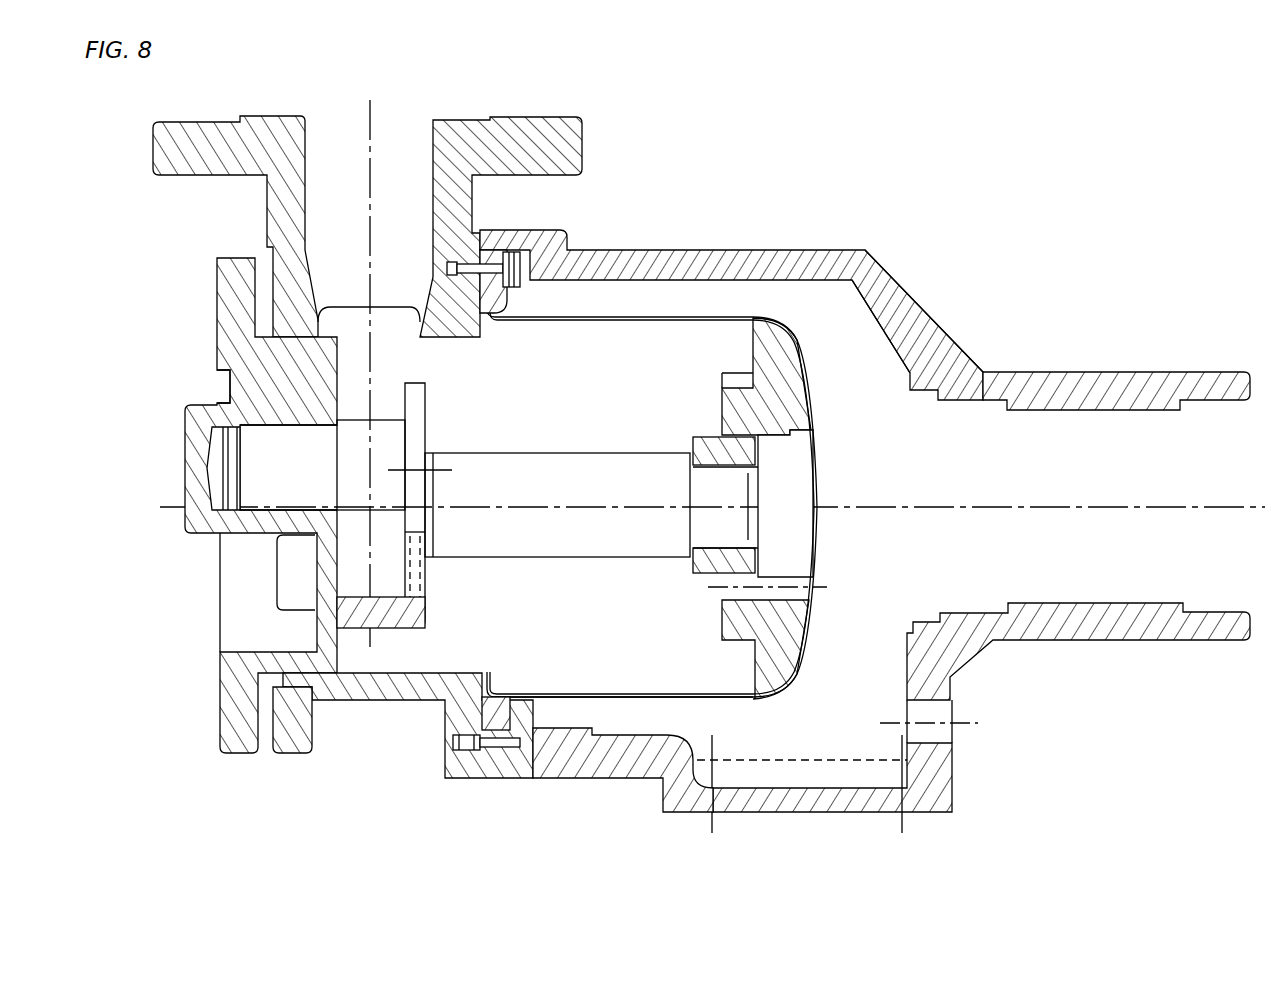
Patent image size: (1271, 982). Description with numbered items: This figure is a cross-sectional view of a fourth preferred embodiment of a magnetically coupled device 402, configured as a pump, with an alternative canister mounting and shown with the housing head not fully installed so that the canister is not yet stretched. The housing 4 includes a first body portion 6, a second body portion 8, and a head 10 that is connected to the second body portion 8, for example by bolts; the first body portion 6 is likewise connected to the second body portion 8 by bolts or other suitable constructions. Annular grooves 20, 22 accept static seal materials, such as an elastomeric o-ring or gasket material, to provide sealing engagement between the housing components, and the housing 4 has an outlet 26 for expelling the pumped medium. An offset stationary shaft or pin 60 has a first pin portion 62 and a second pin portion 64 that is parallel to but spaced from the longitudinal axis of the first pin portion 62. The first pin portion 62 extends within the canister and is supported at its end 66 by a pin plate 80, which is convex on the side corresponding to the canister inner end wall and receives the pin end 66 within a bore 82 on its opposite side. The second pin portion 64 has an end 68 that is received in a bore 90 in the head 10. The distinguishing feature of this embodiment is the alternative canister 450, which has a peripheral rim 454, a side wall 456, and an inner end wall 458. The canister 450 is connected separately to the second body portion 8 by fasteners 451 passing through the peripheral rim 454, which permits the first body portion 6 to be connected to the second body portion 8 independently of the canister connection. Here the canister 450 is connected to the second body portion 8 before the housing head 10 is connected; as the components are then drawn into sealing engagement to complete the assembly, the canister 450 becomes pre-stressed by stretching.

The housing 4 is at (808, 250).
The first body portion 6 is at (1020, 380).
The second body portion 8 is at (290, 755).
The head 10 is at (232, 760).
The annular groove 20 is at (277, 333).
The annular groove 22 is at (478, 720).
The outlet 26 is at (408, 147).
The offset stationary shaft or pin 60 is at (583, 448).
The first pin portion 62 is at (628, 475).
The second pin portion 64 is at (303, 447).
The end of first pin portion 66 is at (700, 482).
The end of second pin portion 68 is at (255, 490).
The pin plate 80 is at (828, 348).
The bore 82 is at (783, 377).
The bore 90 is at (228, 400).
The magnetically coupled device 402 is at (1028, 222).
The canister 450 is at (733, 701).
The fasteners 451 is at (505, 770).
The peripheral rim 454 is at (455, 765).
The side wall 456 is at (640, 699).
The inner end wall 458 is at (790, 345).